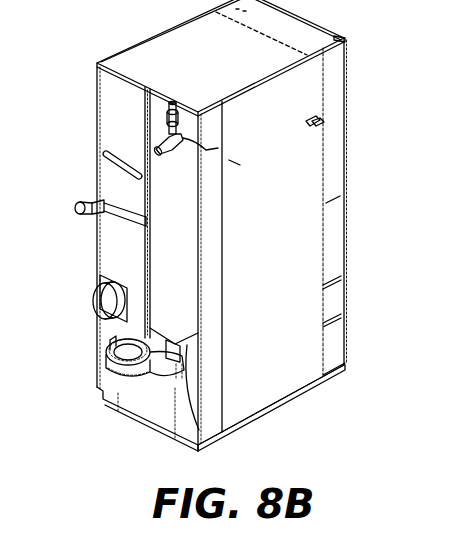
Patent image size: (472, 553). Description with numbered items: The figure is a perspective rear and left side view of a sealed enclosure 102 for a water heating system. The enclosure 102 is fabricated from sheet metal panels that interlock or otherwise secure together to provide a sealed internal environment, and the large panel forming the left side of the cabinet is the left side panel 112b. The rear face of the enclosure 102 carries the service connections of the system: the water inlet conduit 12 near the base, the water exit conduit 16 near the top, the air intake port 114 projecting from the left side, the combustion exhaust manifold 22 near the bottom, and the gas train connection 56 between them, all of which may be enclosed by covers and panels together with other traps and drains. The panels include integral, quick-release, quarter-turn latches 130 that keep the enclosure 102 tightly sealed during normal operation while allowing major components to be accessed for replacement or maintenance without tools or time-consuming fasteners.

The enclosure 102 is at (88, 57).
The water exit conduit 16 is at (166, 140).
The gas train connection 56 is at (88, 203).
The air intake port 114 is at (92, 306).
The combustion exhaust manifold 22 is at (110, 362).
The quarter-turn latch 130 is at (323, 123).
The left side panel 112b is at (285, 368).
The water inlet conduit 12 is at (206, 428).